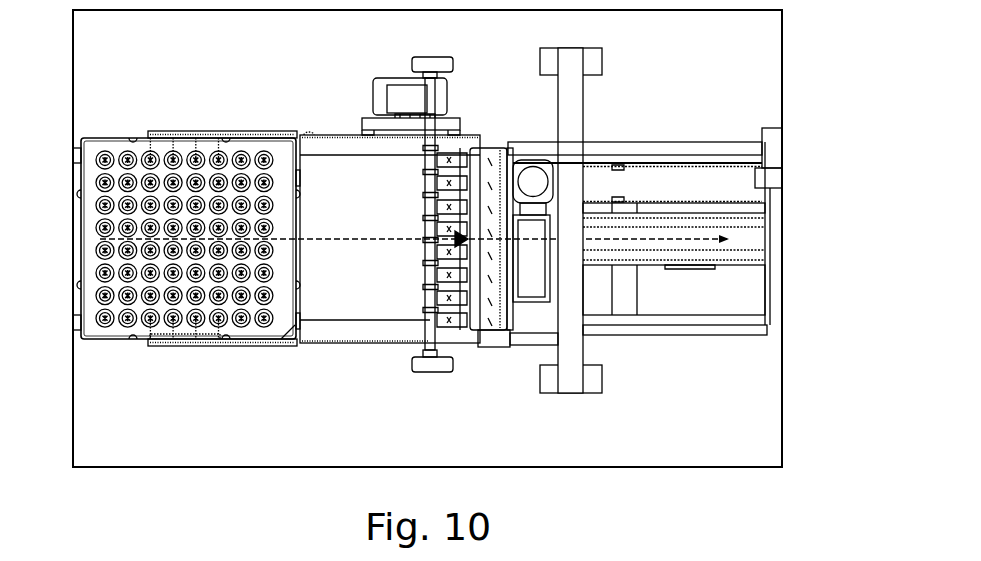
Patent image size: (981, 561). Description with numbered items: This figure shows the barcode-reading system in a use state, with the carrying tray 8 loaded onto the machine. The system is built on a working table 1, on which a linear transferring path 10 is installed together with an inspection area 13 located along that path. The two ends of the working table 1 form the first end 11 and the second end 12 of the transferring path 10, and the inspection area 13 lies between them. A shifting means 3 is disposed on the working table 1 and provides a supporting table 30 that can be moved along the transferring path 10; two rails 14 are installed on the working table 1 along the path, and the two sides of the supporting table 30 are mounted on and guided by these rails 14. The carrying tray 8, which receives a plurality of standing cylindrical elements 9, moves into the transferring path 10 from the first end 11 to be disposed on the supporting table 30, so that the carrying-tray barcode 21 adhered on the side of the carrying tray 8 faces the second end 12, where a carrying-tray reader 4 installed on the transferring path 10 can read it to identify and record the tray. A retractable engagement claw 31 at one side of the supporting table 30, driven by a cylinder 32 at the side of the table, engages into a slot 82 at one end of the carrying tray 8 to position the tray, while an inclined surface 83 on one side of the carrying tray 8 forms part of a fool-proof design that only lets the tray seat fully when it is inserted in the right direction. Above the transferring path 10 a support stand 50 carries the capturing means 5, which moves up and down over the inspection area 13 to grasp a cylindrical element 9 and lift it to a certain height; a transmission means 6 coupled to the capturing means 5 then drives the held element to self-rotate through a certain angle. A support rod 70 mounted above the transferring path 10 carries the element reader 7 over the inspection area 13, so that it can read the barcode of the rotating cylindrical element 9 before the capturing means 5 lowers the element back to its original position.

The working table 1 is at (618, 457).
The shifting means 3 is at (660, 210).
The carrying-tray reader 4 is at (755, 178).
The capturing means 5 is at (535, 346).
The transmission means 6 is at (478, 150).
The element reader 7 is at (432, 318).
The carrying tray 8 is at (122, 343).
The cylindrical elements 9 is at (260, 154).
The transferring path 10 is at (335, 242).
The first end 11 is at (92, 110).
The second end 12 is at (772, 116).
The inspection area 13 is at (512, 382).
The rails 14 is at (632, 150).
The carrying-tray barcode 21 is at (302, 178).
The supporting table 30 is at (352, 303).
The retractable engagement claw 31 is at (362, 124).
The cylinder 32 is at (404, 100).
The support stand 50 is at (580, 346).
The support rod 70 is at (436, 98).
The slot 82 is at (133, 136).
The inclined surface 83 is at (293, 346).